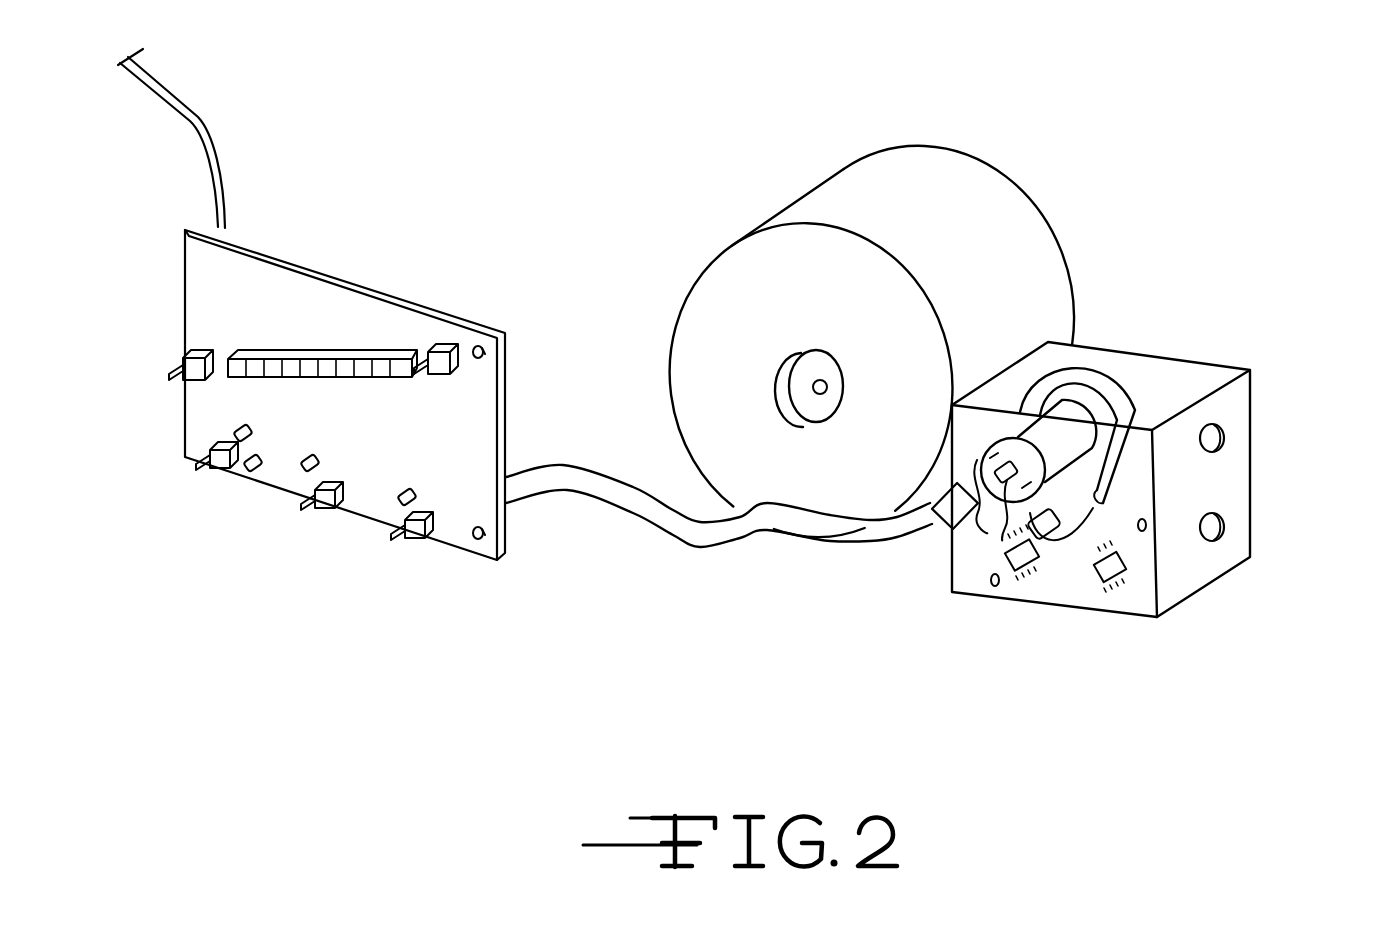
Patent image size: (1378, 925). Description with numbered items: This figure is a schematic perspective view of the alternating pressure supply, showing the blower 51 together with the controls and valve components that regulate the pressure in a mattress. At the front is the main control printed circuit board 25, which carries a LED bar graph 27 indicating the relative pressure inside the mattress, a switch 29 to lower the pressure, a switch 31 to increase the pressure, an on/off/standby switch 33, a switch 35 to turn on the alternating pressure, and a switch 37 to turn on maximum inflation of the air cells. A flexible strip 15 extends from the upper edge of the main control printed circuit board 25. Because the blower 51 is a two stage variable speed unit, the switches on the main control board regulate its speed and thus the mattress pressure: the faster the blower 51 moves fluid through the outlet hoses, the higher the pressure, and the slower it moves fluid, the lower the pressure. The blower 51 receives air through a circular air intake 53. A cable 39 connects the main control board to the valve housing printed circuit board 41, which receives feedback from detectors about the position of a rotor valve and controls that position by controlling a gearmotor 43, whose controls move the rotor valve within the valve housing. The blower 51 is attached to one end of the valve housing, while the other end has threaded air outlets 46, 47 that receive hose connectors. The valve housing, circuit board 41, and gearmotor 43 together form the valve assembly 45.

The flexible strip 15 is at (167, 110).
The main control printed circuit board 25 is at (265, 247).
The LED bar graph 27 is at (343, 317).
The switch 29 is at (168, 352).
The switch 31 is at (455, 310).
The on/off/standby switch 33 is at (205, 457).
The switch 35 is at (305, 497).
The switch 37 is at (405, 540).
The cable 39 is at (682, 547).
The valve housing printed circuit board 41 is at (1122, 592).
The gearmotor 43 is at (1092, 495).
The valve assembly 45 is at (1234, 336).
The air outlet 46 is at (1227, 438).
The air outlet 47 is at (1227, 527).
The blower 51 is at (947, 137).
The circular air intake 53 is at (783, 399).